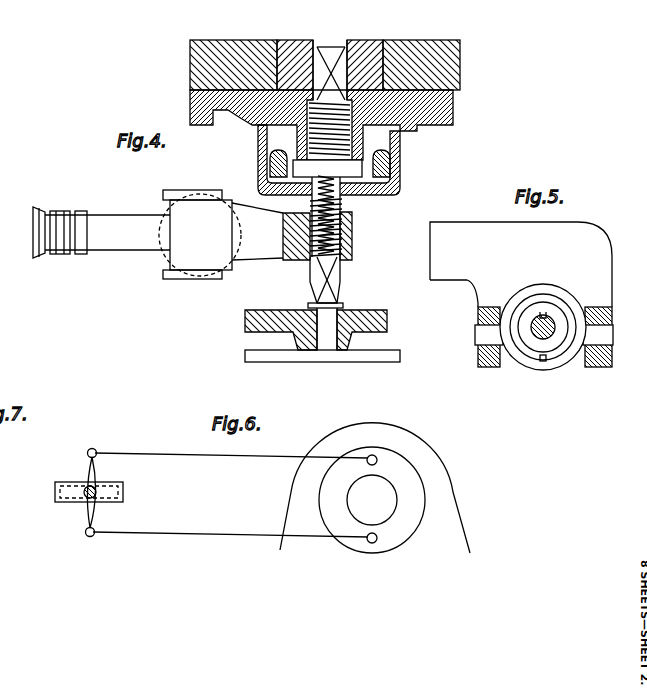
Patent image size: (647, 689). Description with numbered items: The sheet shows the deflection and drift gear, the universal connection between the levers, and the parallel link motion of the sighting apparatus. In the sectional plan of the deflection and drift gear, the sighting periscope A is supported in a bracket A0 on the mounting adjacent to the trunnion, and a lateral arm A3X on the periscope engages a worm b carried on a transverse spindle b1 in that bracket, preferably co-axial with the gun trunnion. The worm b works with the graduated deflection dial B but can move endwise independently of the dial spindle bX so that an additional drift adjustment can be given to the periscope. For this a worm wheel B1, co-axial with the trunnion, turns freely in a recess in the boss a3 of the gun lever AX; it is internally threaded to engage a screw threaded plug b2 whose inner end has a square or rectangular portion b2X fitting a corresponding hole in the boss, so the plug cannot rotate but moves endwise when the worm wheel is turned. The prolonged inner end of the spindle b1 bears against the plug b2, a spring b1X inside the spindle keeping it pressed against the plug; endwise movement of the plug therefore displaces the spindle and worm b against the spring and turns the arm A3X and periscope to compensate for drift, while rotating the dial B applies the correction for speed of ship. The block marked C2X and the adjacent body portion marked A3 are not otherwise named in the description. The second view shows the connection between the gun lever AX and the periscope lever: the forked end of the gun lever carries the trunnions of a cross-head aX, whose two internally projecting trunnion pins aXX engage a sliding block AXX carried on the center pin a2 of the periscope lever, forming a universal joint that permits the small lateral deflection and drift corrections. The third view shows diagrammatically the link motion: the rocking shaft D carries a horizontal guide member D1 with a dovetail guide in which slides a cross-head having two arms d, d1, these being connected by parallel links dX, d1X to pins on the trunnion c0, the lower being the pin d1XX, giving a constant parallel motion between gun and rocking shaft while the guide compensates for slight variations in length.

In FIG. 4, the sighting periscope A is at (137, 234).
In FIG. 4, the gun lever AX is at (240, 100).
In FIG. 5, the gun lever AX is at (521, 294).
In FIG. 5, the sliding block AXX is at (530, 317).
In FIG. 4, the bracket A0 is at (378, 324).
In FIG. 4, the body upper portion A3 is at (414, 113).
In FIG. 4, the lateral arm A3X is at (292, 231).
In FIG. 4, the deflection dial B is at (395, 358).
In FIG. 4, the worm wheel B1 is at (383, 161).
In FIG. 4, the cap block C2X is at (232, 56).
In FIG. 4, the boss of the gun lever a3 is at (368, 57).
In FIG. 5, the cross-head aX is at (567, 362).
In FIG. 5, the internally projecting trunnion pins aXX is at (544, 312).
In FIG. 6, the internally projecting trunnion pins aXX is at (372, 455).
In FIG. 5, the center pin a2 is at (535, 343).
In FIG. 4, the worm b is at (348, 233).
In FIG. 4, the spindle of the deflection dial bX is at (327, 325).
In FIG. 4, the transverse spindle b1 is at (342, 262).
In FIG. 4, the spring b1X is at (342, 200).
In FIG. 4, the screw threaded plug b2 is at (303, 133).
In FIG. 4, the square or rectangular portion b2X is at (317, 98).
In FIG. 6, the trunnion c0 is at (402, 477).
In FIG. 6, the arm of the cross-head d is at (91, 463).
In FIG. 6, the arm of the cross-head d1 is at (92, 518).
In FIG. 6, the parallel link dX is at (204, 455).
In FIG. 6, the parallel link d1X is at (243, 535).
In FIG. 6, the pin on the trunnion d1XX is at (373, 543).
In FIG. 6, the rocking shaft D is at (80, 500).
In FIG. 6, the horizontal guide member D1 is at (63, 497).